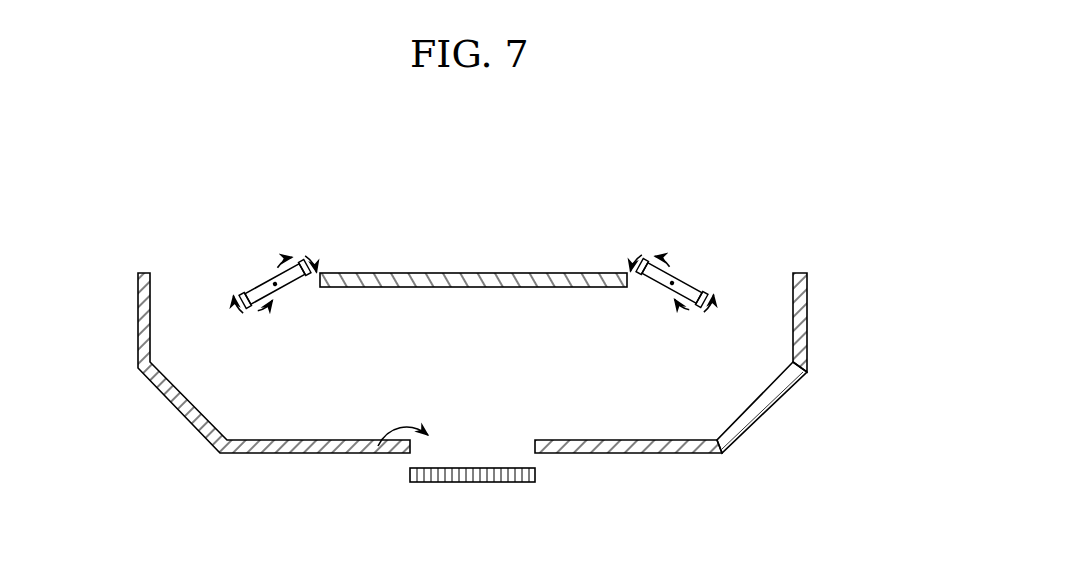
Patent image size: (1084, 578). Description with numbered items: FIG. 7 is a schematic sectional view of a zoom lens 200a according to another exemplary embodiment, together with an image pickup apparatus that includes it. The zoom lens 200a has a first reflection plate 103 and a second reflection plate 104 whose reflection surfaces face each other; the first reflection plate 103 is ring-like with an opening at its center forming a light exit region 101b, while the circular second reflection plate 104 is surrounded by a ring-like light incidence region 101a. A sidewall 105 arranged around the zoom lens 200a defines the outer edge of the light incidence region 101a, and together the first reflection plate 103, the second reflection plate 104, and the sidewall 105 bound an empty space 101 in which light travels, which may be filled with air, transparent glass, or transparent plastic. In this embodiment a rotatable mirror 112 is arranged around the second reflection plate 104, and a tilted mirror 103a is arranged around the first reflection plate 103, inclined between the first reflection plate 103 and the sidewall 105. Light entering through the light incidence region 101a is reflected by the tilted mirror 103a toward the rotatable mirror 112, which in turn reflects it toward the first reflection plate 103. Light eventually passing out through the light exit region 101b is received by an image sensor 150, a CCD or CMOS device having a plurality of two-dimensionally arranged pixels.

The zoom lens 200a is at (838, 190).
The empty space 101 is at (491, 352).
The light incidence region 101a is at (745, 272).
The light exit region 101b is at (382, 441).
The first reflection plate 103 is at (624, 448).
The tilted mirror 103a is at (768, 407).
The second reflection plate 104 is at (475, 281).
The sidewall 105 is at (806, 312).
The rotatable mirror 112 is at (281, 274).
The image sensor 150 is at (474, 481).